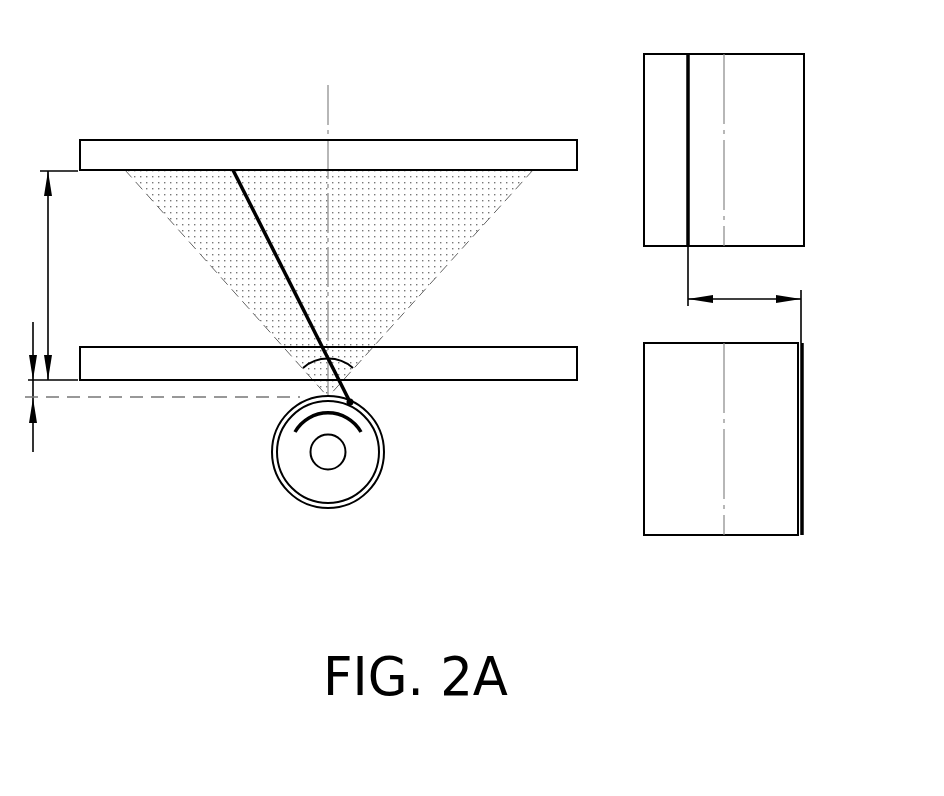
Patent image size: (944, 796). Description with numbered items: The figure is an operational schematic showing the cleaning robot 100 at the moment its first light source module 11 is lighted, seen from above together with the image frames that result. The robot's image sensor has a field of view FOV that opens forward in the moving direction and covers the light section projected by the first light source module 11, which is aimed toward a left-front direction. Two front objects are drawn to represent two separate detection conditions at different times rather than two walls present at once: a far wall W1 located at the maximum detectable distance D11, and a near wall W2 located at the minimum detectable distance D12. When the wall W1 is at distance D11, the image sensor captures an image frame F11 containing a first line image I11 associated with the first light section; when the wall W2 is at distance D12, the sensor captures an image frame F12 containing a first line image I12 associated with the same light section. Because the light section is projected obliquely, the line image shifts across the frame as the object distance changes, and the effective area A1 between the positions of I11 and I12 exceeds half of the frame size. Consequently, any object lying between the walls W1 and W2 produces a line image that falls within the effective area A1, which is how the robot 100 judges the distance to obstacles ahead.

The first light source module 11 is at (353, 402).
The cleaning robot 100 is at (362, 469).
The front object W1 is at (328, 156).
The front object W2 is at (328, 364).
The maximum detectable distance D11 is at (46, 275).
The minimum detectable distance D12 is at (150, 387).
The field of view FOV is at (355, 347).
The image frame F11 is at (804, 153).
The image frame F12 is at (804, 440).
The first line image I11 is at (688, 54).
The first line image I12 is at (802, 535).
The effective area A1 is at (744, 294).